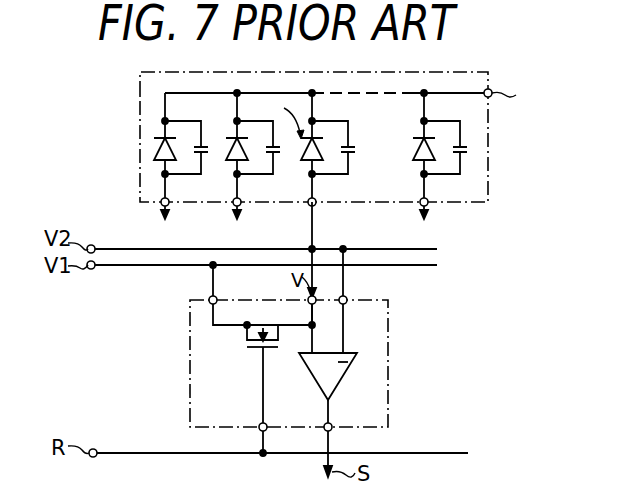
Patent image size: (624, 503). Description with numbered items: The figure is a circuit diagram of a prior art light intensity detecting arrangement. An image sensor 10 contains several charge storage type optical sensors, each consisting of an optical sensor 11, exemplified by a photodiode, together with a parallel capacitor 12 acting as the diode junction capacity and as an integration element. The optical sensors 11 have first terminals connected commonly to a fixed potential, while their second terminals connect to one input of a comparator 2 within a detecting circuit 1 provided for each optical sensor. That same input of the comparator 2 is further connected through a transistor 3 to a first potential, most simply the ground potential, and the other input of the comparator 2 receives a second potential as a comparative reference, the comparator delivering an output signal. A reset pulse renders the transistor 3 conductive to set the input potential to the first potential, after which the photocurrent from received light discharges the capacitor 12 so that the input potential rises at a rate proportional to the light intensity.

The image sensor 10 is at (140, 97).
The optical sensor 11 is at (323, 157).
The parallel capacitor 12 is at (352, 150).
The detecting circuit 1 is at (190, 318).
The comparator 2 is at (347, 371).
The transistor 3 is at (247, 330).